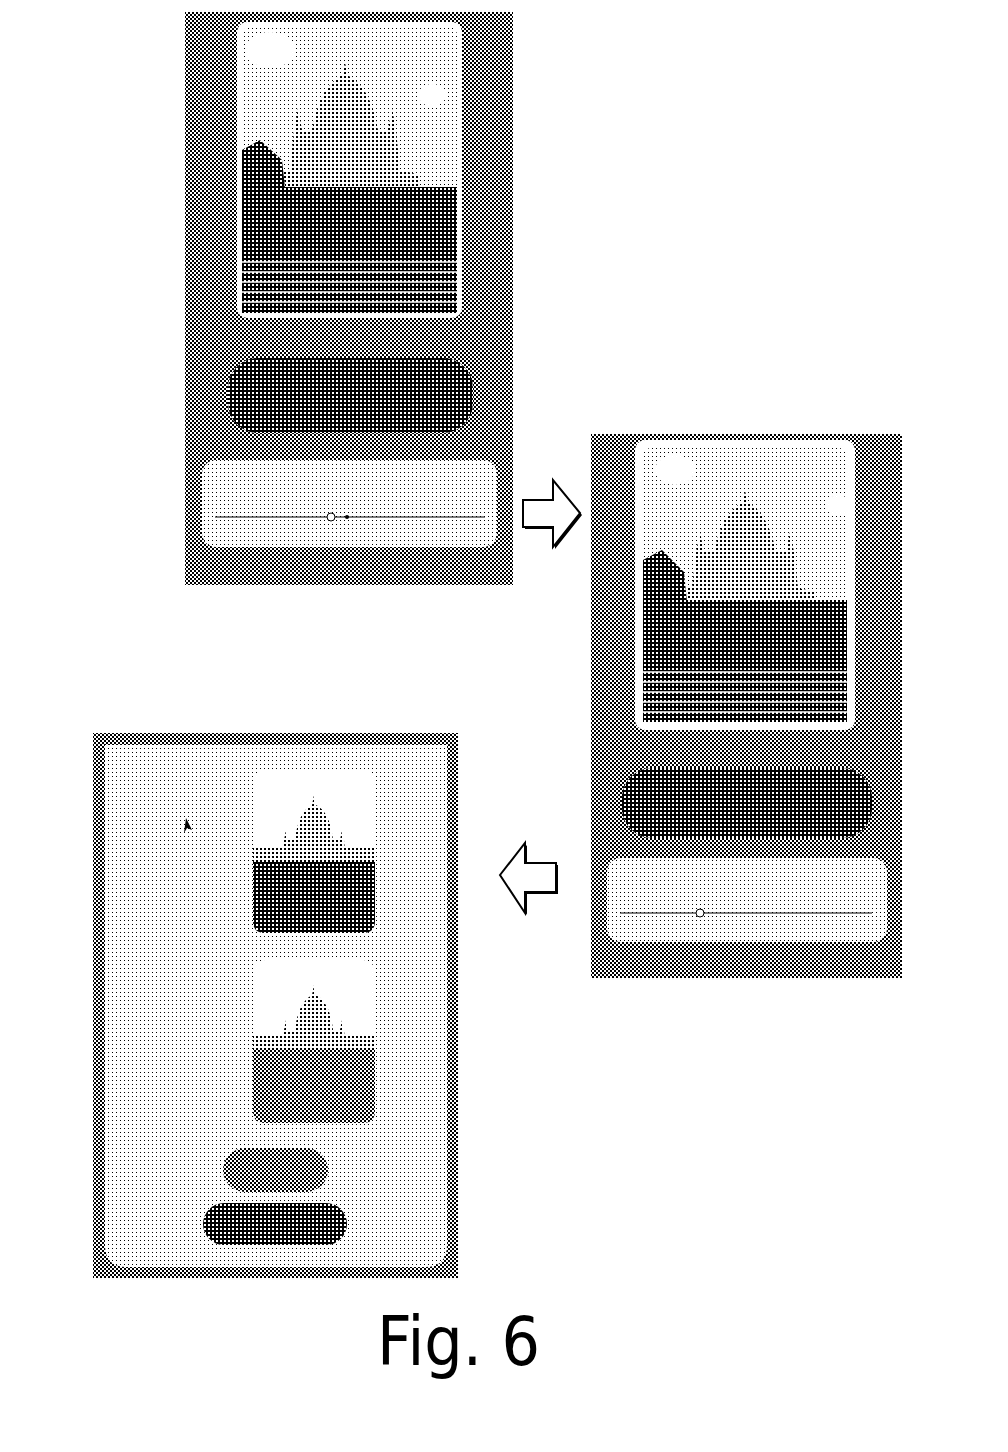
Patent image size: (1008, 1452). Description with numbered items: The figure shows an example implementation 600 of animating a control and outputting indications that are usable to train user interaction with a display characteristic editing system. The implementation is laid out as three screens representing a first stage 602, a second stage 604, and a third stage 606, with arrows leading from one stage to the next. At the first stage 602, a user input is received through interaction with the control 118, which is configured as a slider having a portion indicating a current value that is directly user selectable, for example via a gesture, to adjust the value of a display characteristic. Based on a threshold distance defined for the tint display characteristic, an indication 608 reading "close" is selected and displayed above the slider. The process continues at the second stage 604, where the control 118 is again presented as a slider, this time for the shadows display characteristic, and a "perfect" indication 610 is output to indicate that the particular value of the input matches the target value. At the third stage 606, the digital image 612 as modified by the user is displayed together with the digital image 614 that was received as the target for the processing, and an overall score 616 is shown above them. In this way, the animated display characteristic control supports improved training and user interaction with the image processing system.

The example implementation 600 is at (104, 39).
The first stage 602 is at (148, 167).
The second stage 604 is at (640, 396).
The third stage 606 is at (107, 634).
The indication 608 is at (383, 367).
The perfect indication 610 is at (770, 777).
The digital image as modified by the user 612 is at (252, 1037).
The digital image received as target 614 is at (253, 878).
The overall score 616 is at (125, 783).
The control 118 is at (305, 519).